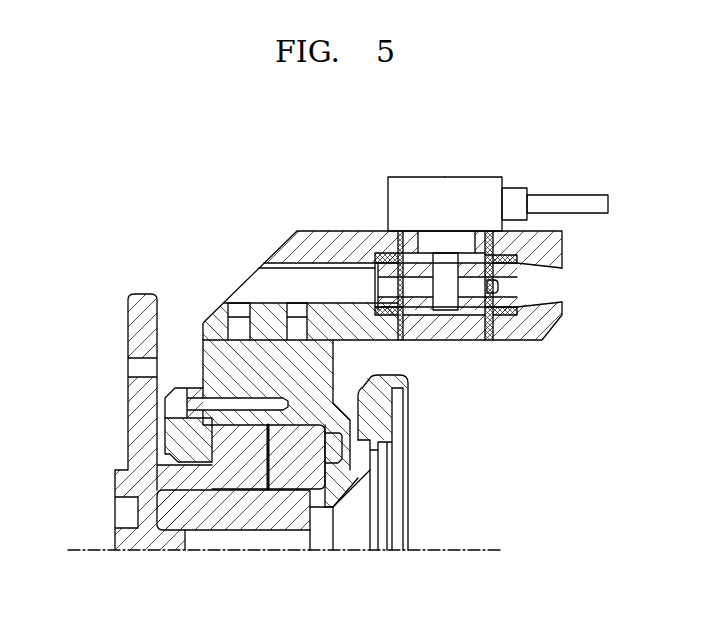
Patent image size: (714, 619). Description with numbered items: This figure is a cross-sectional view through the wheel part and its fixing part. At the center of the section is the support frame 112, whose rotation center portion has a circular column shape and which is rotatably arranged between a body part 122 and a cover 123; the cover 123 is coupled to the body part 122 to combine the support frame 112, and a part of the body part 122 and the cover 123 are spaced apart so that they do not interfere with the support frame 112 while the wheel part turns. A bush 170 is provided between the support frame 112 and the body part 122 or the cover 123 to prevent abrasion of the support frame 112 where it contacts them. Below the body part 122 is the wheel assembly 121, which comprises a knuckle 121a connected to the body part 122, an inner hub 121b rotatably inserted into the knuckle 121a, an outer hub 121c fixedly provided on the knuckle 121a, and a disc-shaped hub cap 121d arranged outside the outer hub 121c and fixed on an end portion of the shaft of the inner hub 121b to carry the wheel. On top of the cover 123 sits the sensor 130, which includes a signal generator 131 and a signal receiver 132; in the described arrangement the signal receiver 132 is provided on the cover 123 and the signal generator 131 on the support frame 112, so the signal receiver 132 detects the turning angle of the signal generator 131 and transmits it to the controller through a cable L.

The support frame 112 is at (397, 240).
The wheel assembly 121 is at (357, 365).
The knuckle 121a is at (333, 367).
The inner hub 121b is at (378, 412).
The outer hub 121c is at (180, 440).
The hub cap 121d is at (185, 478).
The body part 122 is at (337, 317).
The cover 123 is at (303, 243).
The sensor 130 is at (457, 168).
The signal generator 131 is at (439, 244).
The signal receiver 132 is at (486, 179).
The bush 170 is at (520, 310).
The cable L is at (572, 202).